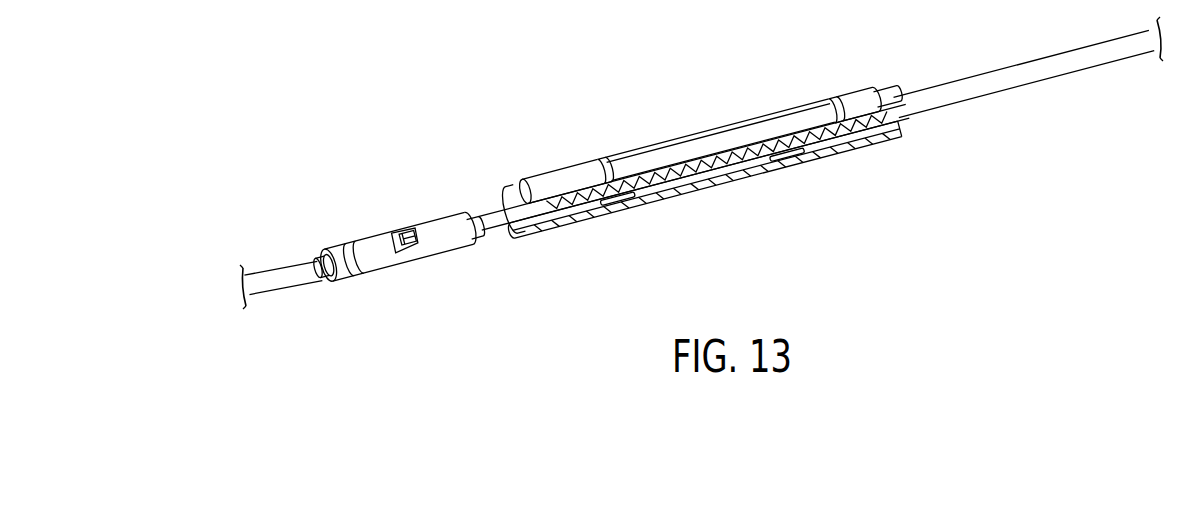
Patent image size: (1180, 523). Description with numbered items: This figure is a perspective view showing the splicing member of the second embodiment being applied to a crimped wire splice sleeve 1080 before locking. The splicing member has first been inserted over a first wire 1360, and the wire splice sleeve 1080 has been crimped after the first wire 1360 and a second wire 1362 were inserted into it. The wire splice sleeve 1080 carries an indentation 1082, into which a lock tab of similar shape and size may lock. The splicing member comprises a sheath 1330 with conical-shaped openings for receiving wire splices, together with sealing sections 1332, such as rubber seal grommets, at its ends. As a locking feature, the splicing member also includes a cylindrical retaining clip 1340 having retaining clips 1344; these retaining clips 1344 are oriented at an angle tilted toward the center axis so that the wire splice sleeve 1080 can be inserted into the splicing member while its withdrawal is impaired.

The wire splice sleeve 1080 is at (449, 215).
The indentation 1082 is at (375, 232).
The sheath 1330 is at (653, 145).
The sealing sections 1332 is at (574, 166).
The cylindrical retaining clip 1340 is at (705, 183).
The retaining clips 1344 is at (613, 202).
The first wire 1360 is at (1012, 67).
The second wire 1362 is at (282, 268).